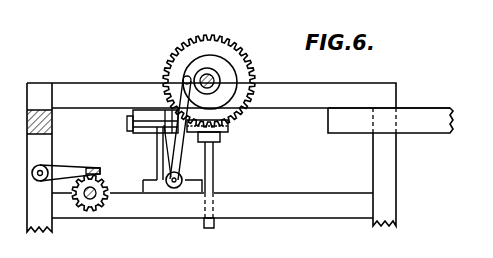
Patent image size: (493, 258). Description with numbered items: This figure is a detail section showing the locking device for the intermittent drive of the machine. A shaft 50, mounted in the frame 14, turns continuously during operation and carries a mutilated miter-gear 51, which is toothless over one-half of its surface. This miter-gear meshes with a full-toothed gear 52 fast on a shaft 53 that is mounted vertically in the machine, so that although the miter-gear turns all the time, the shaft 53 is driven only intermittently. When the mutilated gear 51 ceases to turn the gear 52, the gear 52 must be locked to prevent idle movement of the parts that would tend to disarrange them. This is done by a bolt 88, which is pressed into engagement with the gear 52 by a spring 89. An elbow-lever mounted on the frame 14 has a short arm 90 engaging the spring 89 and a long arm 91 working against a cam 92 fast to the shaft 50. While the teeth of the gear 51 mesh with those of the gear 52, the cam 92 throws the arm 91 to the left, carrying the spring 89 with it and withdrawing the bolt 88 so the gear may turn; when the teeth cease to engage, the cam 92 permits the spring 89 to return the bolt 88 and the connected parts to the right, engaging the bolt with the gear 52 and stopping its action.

The frame 14 is at (240, 157).
The shaft 50 is at (212, 88).
The mutilated miter-gear 51 is at (243, 71).
The full-toothed gear 52 is at (224, 134).
The shaft 53 is at (214, 182).
The bolt 88 is at (148, 110).
The spring 89 is at (160, 160).
The short arm 90 is at (165, 151).
The long arm 91 is at (178, 163).
The cam 92 is at (228, 81).